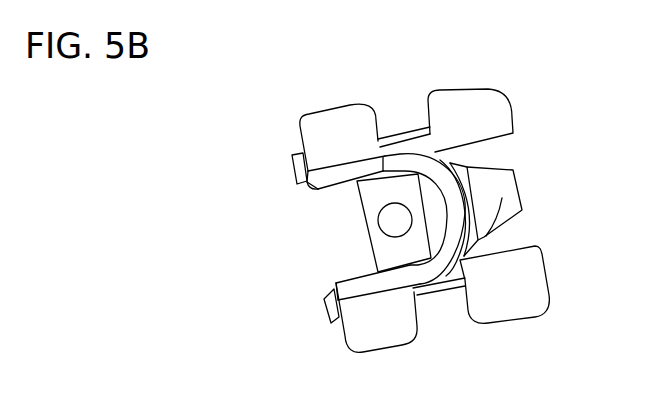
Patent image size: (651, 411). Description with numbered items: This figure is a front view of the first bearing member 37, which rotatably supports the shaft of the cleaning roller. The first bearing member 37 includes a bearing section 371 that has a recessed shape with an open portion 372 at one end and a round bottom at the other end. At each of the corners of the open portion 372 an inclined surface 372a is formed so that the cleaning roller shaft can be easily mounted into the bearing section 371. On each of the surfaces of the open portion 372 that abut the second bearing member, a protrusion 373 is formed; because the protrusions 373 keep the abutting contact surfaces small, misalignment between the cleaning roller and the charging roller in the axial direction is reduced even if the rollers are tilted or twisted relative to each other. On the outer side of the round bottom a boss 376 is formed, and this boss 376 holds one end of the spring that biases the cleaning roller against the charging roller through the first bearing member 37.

The first bearing member 37 is at (324, 88).
The bearing section 371 is at (412, 252).
The open portion 372 is at (325, 237).
The inclined surfaces 372a is at (305, 187).
The protrusions 373 is at (294, 173).
The boss 376 is at (502, 200).